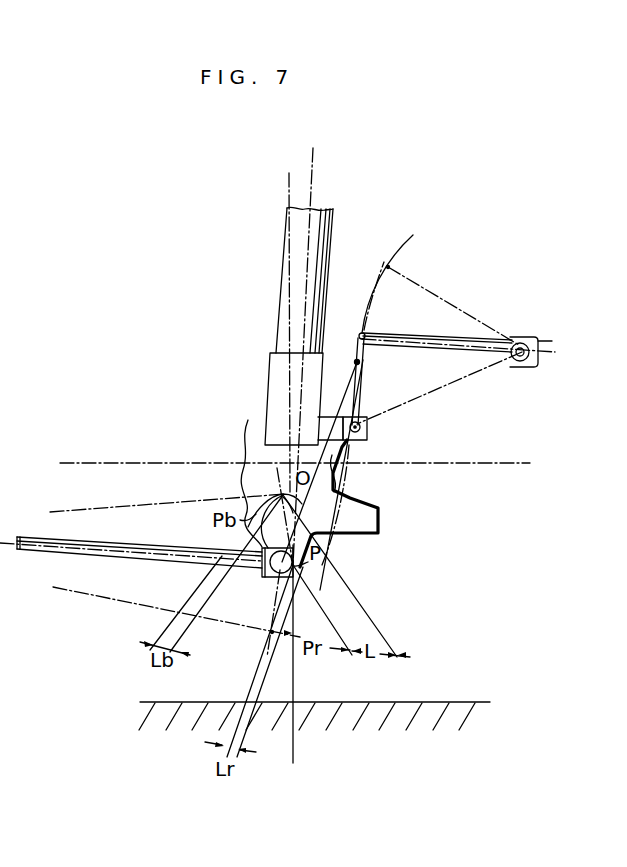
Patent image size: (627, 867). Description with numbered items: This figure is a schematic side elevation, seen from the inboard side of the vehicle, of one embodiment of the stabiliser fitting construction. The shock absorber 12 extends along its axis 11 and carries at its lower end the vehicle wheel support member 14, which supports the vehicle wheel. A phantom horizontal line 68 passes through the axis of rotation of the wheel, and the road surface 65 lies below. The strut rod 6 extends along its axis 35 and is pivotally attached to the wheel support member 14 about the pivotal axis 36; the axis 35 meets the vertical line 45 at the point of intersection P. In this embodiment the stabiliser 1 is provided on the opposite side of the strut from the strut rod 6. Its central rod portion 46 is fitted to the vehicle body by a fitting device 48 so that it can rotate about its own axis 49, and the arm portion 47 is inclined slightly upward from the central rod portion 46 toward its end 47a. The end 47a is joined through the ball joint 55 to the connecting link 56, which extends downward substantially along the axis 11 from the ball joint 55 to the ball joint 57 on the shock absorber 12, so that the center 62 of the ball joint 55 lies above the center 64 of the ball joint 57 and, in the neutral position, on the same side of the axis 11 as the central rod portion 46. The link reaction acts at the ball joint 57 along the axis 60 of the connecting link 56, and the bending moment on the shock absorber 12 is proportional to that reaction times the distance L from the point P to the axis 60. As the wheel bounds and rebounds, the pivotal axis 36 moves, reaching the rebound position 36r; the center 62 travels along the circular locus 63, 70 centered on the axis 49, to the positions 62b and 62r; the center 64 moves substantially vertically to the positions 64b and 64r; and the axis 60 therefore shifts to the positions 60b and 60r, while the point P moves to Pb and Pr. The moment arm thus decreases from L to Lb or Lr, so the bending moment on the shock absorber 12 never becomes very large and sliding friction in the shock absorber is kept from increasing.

The stabiliser 1 is at (464, 345).
The strut rod 6 is at (168, 563).
The axis 11 is at (311, 194).
The shock absorber 12 is at (275, 318).
The vehicle wheel support member 14 is at (378, 533).
The axis of the strut rod 35 is at (40, 536).
The pivotal axis 36 is at (270, 578).
The maximum rebound position of pivotal axis 36r is at (271, 634).
The vertical line 45 is at (297, 746).
The central rod portion 46 is at (528, 360).
The arm portion 47 is at (423, 340).
The end of arm portion 47a is at (373, 332).
The fitting device 48 is at (541, 343).
The axis of the central rod portion 49 is at (521, 343).
The ball joint 55 is at (366, 310).
The connecting link 56 is at (358, 382).
The ball joint 57 is at (366, 440).
The axis of the connecting link 60 is at (357, 362).
The maximum bound position of connecting link axis 60b is at (330, 398).
The maximum rebound position of connecting link axis 60r is at (354, 466).
The center of ball joint 55 62 is at (362, 333).
The maximum bound position of ball joint center 62b is at (388, 266).
The maximum rebound position of ball joint center 62r is at (378, 405).
The locus 63 is at (281, 475).
The center of ball joint 57 64 is at (362, 432).
The maximum bound position of ball joint center 64b is at (360, 362).
The maximum rebound position of ball joint center 64r is at (350, 494).
The road surface 65 is at (458, 702).
The phantom horizontal line 68 is at (499, 461).
The locus 70 is at (398, 261).